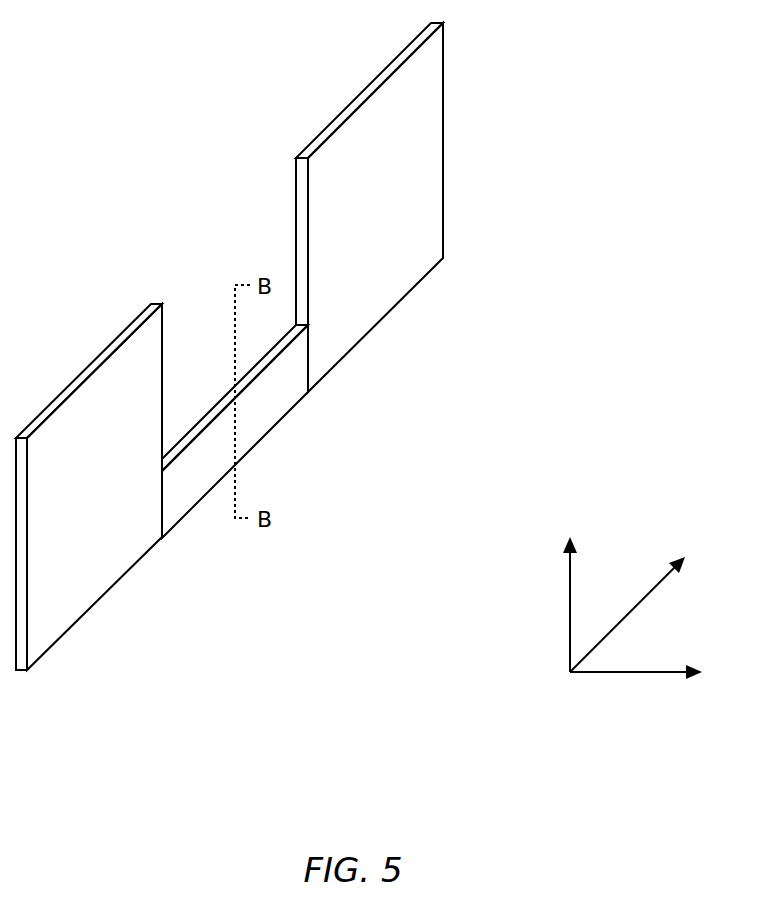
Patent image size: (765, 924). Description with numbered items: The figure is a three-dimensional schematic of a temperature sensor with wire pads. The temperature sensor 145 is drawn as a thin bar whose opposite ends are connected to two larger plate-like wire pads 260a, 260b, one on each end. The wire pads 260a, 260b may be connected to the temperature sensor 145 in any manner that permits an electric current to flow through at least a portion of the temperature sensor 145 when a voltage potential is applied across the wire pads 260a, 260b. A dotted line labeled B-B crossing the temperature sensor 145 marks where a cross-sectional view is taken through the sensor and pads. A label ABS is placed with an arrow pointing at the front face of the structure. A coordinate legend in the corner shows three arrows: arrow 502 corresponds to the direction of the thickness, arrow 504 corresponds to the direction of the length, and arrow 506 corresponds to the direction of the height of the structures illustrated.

The wire pad 260a is at (350, 220).
The wire pad 260b is at (70, 500).
The temperature sensor 145 is at (177, 479).
The air bearing surface ABS is at (430, 288).
The arrow 502 is at (625, 674).
The arrow 504 is at (649, 594).
The arrow 506 is at (567, 603).